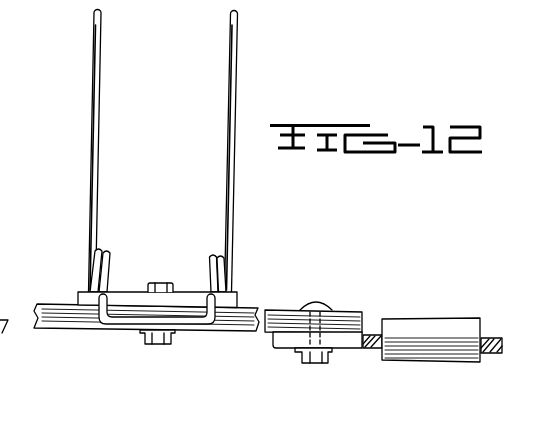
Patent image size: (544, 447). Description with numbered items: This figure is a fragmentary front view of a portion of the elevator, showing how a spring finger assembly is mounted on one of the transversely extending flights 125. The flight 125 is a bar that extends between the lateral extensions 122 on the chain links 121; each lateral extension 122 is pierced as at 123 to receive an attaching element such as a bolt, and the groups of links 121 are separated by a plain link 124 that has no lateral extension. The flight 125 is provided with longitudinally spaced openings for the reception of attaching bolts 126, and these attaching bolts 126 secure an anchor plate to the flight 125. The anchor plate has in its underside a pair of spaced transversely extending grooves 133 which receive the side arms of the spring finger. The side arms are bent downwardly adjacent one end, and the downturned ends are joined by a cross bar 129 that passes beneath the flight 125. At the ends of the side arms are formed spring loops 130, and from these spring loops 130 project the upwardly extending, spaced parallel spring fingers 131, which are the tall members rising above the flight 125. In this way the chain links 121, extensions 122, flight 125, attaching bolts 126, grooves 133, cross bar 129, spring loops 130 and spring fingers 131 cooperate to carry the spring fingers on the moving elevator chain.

The links 121 is at (420, 333).
The lateral extensions 122 is at (290, 337).
The pierced openings 123 is at (322, 336).
The plain link 124 is at (492, 338).
The flights 125 is at (241, 313).
The attaching bolts 126 is at (160, 283).
The cross bar 129 is at (133, 332).
The spring loops 130 is at (100, 271).
The spring fingers 131 is at (99, 115).
The grooves 133 is at (120, 296).